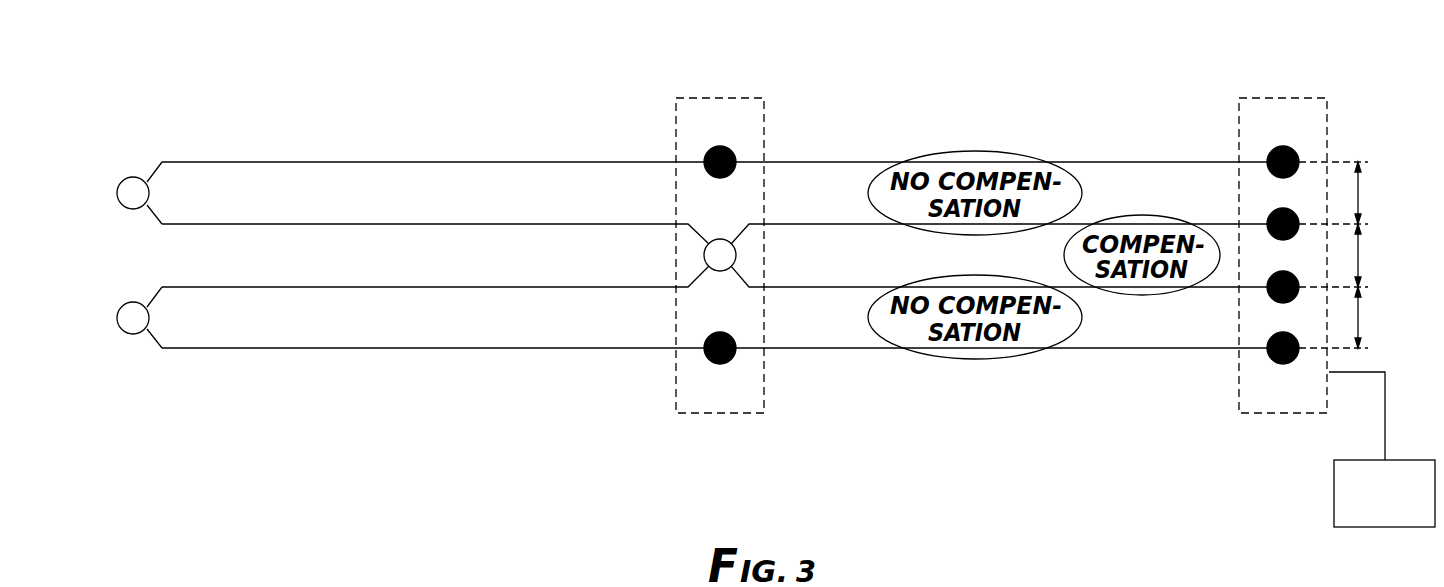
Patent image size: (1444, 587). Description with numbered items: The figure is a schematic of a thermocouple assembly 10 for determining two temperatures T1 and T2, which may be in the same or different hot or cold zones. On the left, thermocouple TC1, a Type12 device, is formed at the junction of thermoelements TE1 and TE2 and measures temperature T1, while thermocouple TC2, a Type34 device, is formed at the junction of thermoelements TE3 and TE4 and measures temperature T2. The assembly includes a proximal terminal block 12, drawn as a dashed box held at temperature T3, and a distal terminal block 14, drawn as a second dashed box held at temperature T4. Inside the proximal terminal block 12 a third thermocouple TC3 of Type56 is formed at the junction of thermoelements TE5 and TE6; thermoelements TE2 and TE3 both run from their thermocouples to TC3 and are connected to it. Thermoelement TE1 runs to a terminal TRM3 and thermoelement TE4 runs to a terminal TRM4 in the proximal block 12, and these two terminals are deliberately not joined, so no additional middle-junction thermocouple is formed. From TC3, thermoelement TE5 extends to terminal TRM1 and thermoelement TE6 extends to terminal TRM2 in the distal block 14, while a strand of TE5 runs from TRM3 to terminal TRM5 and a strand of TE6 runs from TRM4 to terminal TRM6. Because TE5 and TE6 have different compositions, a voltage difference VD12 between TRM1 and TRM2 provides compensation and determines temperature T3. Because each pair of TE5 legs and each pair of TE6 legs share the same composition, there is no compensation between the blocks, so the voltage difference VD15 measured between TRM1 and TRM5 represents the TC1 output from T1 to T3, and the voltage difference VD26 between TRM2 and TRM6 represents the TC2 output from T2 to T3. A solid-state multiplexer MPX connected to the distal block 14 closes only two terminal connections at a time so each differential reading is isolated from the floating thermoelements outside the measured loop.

The thermocouple assembly 10 is at (1303, 72).
The proximal terminal block 12 is at (754, 224).
The distal terminal block 14 is at (1334, 250).
The temperature T1 is at (123, 181).
The temperature T2 is at (123, 306).
The temperature T3 is at (720, 255).
The temperature T4 is at (1283, 255).
The thermocouple TC1 is at (177, 193).
The thermocouple TC2 is at (177, 317).
The thermocouple TC3 is at (719, 239).
The thermoelement TE1 is at (340, 162).
The thermoelement TE2 is at (340, 224).
The thermoelement TE3 is at (340, 287).
The thermoelement TE4 is at (340, 348).
The thermoelement TE5 is at (775, 162).
The thermoelement TE6 is at (775, 287).
The terminal TRM1 is at (1269, 215).
The terminal TRM2 is at (1269, 298).
The terminal TRM3 is at (712, 152).
The terminal TRM4 is at (731, 360).
The terminal TRM5 is at (1269, 150).
The terminal TRM6 is at (1269, 360).
The voltage difference VD15 is at (1394, 193).
The voltage difference VD12 is at (1394, 255).
The voltage difference VD26 is at (1393, 317).
The solid-state multiplexer MPX is at (1382, 449).